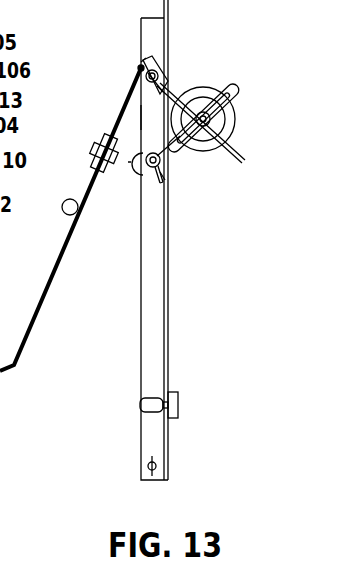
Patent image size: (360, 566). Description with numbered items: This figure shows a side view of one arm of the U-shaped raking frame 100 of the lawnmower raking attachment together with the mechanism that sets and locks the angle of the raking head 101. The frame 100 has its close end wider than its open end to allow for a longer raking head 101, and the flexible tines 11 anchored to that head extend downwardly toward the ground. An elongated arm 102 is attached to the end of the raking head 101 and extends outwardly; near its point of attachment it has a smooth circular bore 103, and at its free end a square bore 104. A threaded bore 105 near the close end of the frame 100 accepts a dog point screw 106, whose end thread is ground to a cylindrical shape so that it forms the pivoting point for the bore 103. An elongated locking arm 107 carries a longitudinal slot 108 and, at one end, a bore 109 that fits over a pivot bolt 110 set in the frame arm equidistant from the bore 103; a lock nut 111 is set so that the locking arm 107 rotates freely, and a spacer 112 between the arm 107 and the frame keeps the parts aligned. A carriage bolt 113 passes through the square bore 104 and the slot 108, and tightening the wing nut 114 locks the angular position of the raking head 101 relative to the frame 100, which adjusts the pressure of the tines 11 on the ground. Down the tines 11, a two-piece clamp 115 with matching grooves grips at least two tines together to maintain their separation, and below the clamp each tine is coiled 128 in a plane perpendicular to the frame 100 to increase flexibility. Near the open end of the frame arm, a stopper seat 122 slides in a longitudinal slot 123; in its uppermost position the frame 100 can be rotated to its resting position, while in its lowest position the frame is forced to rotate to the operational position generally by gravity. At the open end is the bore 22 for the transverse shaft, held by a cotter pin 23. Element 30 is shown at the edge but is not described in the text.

The flexible tines 11 is at (57, 273).
The first bore 22 is at (148, 468).
The first cotter pin 23 is at (156, 476).
The base 30 is at (0, 522).
The U-shaped raking frame 100 is at (170, 317).
The raking head 101 is at (139, 68).
The elongated arm 102 is at (141, 118).
The smooth circular bore 103 is at (137, 117).
The square bore 104 is at (170, 137).
The threaded bore 105 is at (146, 62).
The dog point screw 106 is at (157, 70).
The elongated locking arm 107 is at (241, 90).
The longitudinal slot 108 is at (215, 119).
The bore 109 is at (136, 164).
The pivot bolt 110 is at (158, 180).
The lock nut 111 is at (162, 172).
The spacer 112 is at (158, 173).
The carriage bolt 113 is at (225, 129).
The wing nut 114 is at (218, 136).
The two-piece clamp 115 is at (92, 155).
The stopper seat 122 is at (175, 420).
The longitudinal slot 123 is at (170, 372).
The coil 128 is at (61, 211).